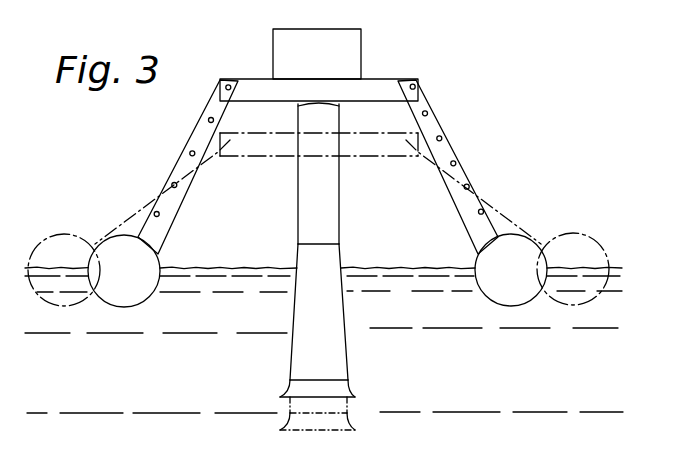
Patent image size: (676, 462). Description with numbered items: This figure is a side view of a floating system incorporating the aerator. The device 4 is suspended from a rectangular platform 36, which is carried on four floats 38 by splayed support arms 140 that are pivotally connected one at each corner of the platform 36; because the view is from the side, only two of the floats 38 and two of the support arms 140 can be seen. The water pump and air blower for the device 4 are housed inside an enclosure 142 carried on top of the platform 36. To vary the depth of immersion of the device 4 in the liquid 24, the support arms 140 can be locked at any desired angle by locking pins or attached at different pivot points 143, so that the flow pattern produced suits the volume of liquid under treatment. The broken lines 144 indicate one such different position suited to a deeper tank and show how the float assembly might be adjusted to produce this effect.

The device 4 is at (349, 221).
The liquid 24 is at (258, 267).
The rectangular platform 36 is at (381, 85).
The floats 38 is at (58, 233).
The support arms 140 is at (195, 132).
The enclosure 142 is at (357, 47).
The pivot points 143 is at (145, 208).
The broken lines 144 is at (358, 412).